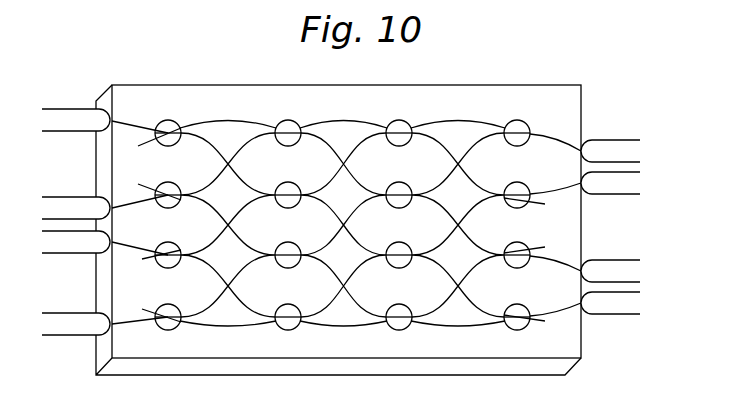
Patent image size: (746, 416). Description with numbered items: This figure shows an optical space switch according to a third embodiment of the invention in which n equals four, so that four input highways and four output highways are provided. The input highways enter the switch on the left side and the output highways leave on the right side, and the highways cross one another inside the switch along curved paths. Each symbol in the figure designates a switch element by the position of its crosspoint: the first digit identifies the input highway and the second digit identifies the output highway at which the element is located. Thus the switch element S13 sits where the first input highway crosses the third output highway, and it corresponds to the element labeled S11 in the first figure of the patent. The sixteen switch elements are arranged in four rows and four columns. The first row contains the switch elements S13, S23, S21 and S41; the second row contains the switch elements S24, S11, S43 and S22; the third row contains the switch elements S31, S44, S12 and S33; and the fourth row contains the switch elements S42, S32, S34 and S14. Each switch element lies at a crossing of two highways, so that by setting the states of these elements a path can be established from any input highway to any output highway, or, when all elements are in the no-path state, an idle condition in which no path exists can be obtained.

The switch element S13 is at (171, 121).
The switch element S23 is at (291, 121).
The switch element S21 is at (402, 121).
The switch element S41 is at (520, 121).
The switch element S24 is at (171, 183).
The switch element S11 is at (291, 183).
The switch element S43 is at (402, 183).
The switch element S22 is at (520, 183).
The switch element S31 is at (171, 243).
The switch element S44 is at (291, 243).
The switch element S12 is at (402, 243).
The switch element S33 is at (520, 243).
The switch element S42 is at (171, 305).
The switch element S32 is at (291, 305).
The switch element S34 is at (402, 305).
The switch element S14 is at (520, 305).